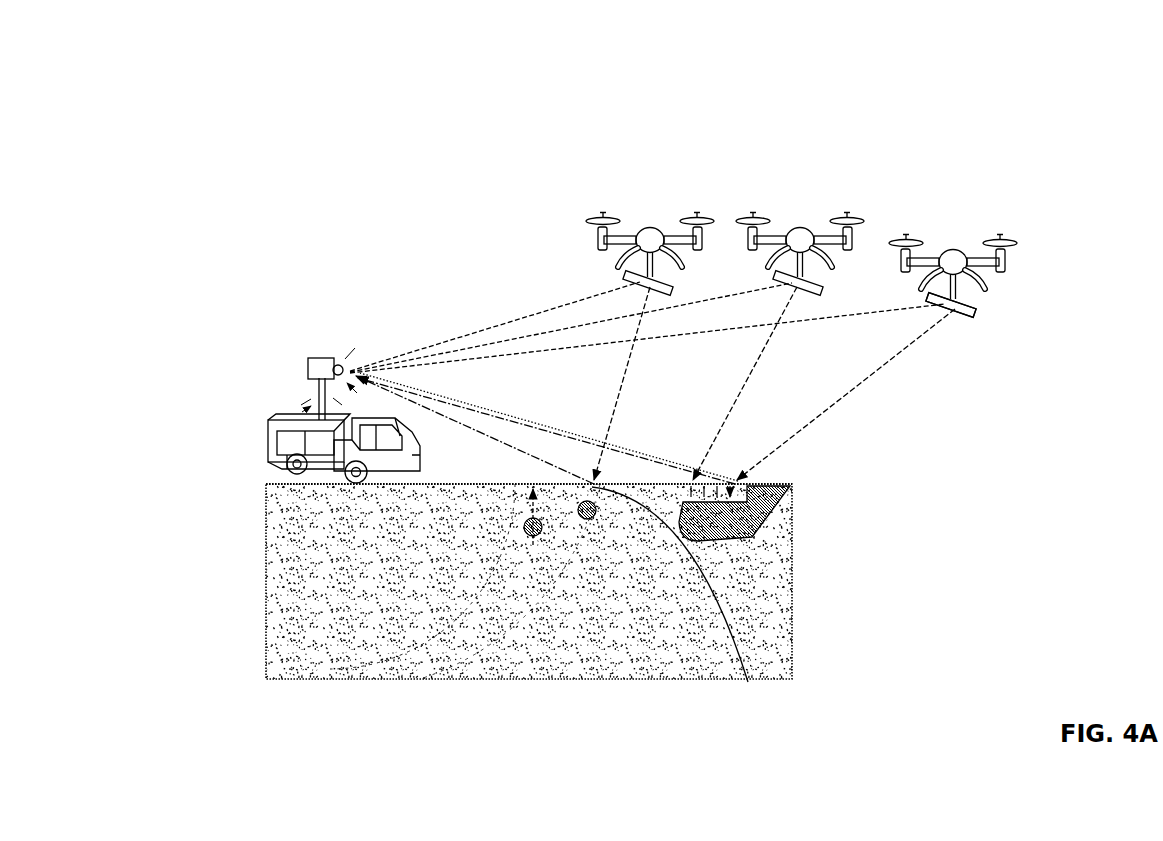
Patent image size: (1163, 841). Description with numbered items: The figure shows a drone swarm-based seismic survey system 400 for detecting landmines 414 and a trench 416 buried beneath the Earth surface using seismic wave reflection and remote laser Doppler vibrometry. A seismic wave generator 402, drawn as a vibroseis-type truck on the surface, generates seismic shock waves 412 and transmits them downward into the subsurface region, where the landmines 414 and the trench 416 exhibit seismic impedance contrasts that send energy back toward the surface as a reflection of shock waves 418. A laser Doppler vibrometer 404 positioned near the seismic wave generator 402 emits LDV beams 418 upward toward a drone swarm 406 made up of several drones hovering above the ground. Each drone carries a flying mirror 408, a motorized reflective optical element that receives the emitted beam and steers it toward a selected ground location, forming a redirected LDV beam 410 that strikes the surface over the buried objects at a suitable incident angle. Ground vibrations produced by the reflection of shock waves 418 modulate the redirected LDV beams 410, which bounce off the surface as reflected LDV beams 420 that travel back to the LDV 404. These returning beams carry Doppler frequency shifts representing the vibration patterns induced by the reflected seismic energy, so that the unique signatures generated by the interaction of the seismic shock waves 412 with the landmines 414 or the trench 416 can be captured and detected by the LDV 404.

The drone swarm-based seismic survey system 400 is at (356, 101).
The seismic wave generator 402 is at (278, 417).
The laser Doppler vibrometer (LDV) 404 is at (325, 357).
The drone swarm 406 is at (652, 227).
The flying mirror 408 is at (960, 314).
The redirected LDV beam 410 is at (823, 410).
The seismic shock waves 412 is at (335, 525).
The landmines 414 is at (585, 521).
The trench 416 is at (748, 538).
The LDV beam / reflection of shock waves 418 is at (808, 695).
The reflected LDV beam 420 is at (468, 411).